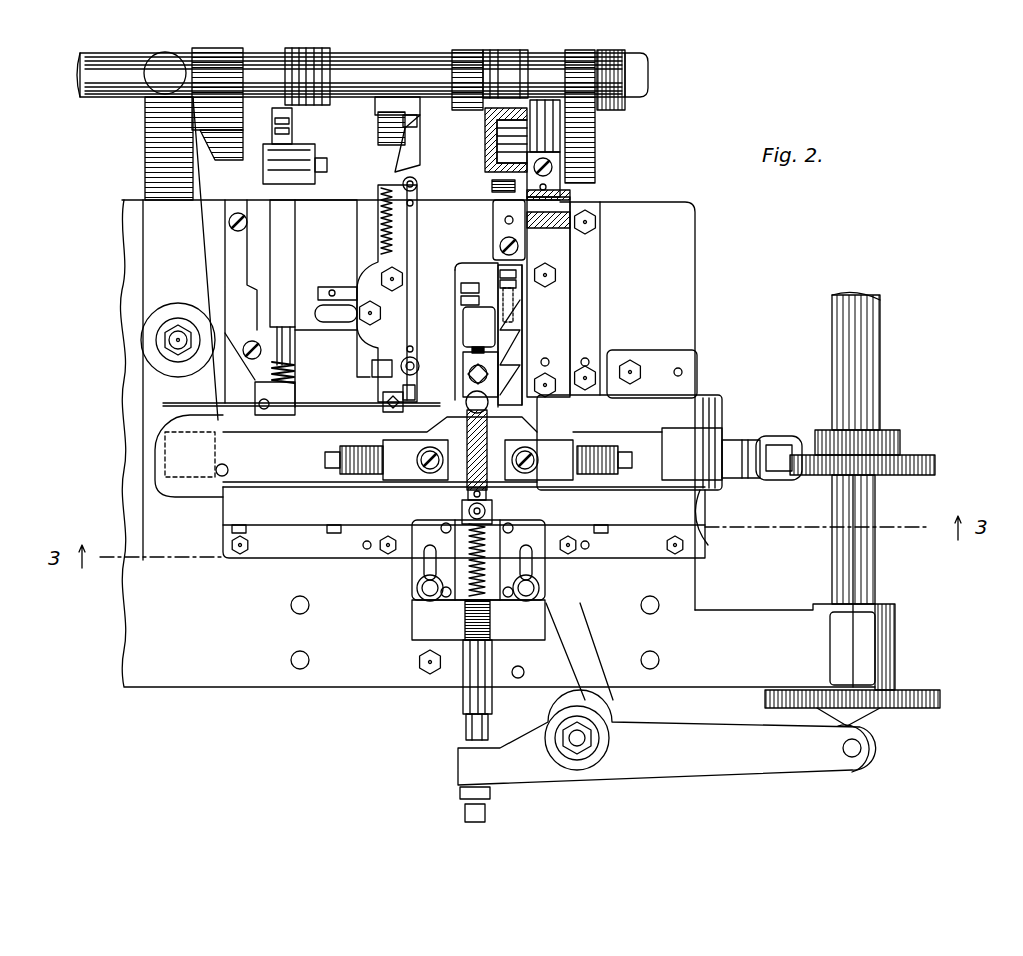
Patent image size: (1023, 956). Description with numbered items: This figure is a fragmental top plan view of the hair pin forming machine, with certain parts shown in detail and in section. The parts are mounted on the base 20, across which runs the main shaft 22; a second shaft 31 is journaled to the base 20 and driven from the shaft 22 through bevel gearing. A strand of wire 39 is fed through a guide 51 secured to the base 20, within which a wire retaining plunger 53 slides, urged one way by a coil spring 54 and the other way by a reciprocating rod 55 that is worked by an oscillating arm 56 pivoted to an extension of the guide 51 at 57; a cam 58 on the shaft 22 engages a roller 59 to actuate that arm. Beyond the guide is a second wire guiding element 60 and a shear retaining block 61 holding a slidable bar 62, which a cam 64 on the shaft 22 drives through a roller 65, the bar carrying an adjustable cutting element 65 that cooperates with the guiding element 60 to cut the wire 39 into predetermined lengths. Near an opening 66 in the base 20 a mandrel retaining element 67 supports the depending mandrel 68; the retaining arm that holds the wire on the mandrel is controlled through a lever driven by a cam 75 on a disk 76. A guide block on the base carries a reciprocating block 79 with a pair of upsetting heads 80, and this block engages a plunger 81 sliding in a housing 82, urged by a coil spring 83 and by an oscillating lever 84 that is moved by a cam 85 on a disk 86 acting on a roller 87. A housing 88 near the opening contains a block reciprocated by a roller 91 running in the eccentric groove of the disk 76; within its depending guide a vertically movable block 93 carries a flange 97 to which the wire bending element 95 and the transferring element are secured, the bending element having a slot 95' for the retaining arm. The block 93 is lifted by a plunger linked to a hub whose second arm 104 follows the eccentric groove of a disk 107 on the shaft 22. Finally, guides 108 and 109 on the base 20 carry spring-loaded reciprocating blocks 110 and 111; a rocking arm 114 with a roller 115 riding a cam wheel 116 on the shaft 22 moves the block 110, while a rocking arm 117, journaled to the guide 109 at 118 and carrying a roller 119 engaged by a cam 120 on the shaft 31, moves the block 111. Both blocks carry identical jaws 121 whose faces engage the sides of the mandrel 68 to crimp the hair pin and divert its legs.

The base 20 is at (160, 690).
The shaft 22 is at (92, 70).
The shaft 31 is at (872, 368).
The strand of wire 39 is at (165, 405).
The guide 51 is at (290, 283).
The wire retaining plunger 53 is at (296, 376).
The coil spring 54 is at (272, 370).
The reciprocating rod 55 is at (292, 345).
The oscillating arm 56 is at (275, 150).
The pivotal connection 57 is at (321, 180).
The cam 58 is at (328, 72).
The roller 59 is at (372, 115).
The second wire guiding element 60 is at (385, 390).
The shear retaining block 61 is at (410, 266).
The slidable bar 62 is at (412, 165).
The cam 64 is at (395, 132).
The roller / adjustable cutting element 65 is at (408, 125).
The opening 66 is at (492, 258).
The mandrel retaining element 67 is at (455, 578).
The mandrel 68 is at (490, 452).
The cam 75 is at (492, 188).
The disk 76 is at (515, 136).
The reciprocating block 79 is at (466, 518).
The upsetting heads 80 is at (468, 490).
The plunger 81 is at (468, 636).
The housing 82 is at (470, 690).
The coil spring 83 is at (468, 618).
The oscillating lever 84 is at (545, 770).
The cam 85 is at (868, 716).
The disk 86 is at (935, 693).
The roller 87 is at (875, 762).
The housing 88 is at (572, 328).
The roller 91 is at (556, 108).
The vertically movable block 93 is at (512, 340).
The wire bending element 95 is at (461, 373).
The slot 95' is at (530, 335).
The flange 97 is at (460, 318).
The second arm 104 is at (652, 106).
The disk 107 is at (596, 163).
The guide 108 is at (305, 512).
The guide 109 is at (612, 420).
The reciprocating block 110 is at (270, 475).
The reciprocating block 111 is at (668, 448).
The rocking arm 114 is at (160, 252).
The roller 115 is at (165, 102).
The cam wheel 116 is at (218, 117).
The rocking arm 117 is at (765, 485).
The journal 118 is at (712, 548).
The roller 119 is at (782, 482).
The cam 120 is at (928, 460).
The jaws 121 is at (438, 476).